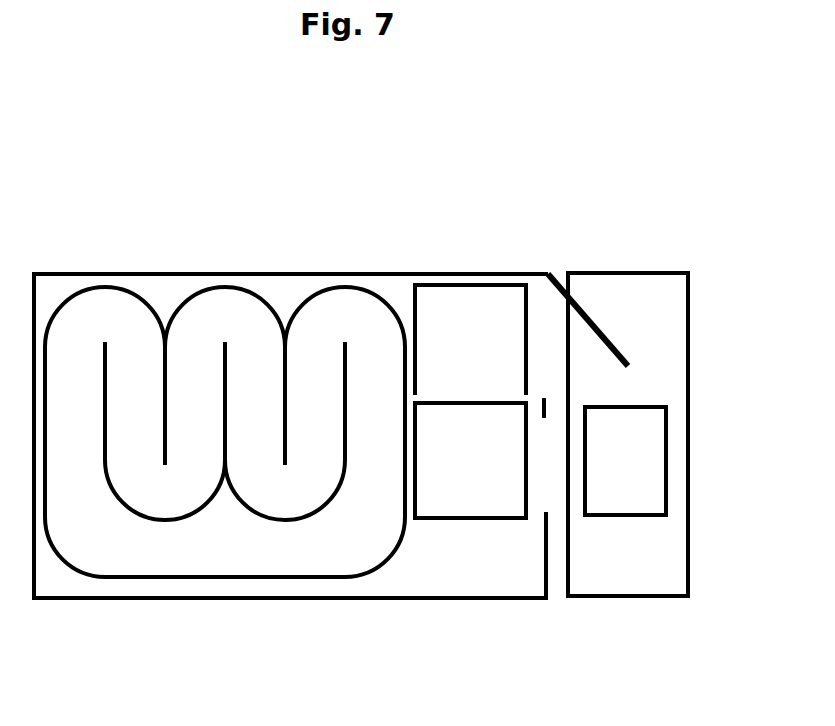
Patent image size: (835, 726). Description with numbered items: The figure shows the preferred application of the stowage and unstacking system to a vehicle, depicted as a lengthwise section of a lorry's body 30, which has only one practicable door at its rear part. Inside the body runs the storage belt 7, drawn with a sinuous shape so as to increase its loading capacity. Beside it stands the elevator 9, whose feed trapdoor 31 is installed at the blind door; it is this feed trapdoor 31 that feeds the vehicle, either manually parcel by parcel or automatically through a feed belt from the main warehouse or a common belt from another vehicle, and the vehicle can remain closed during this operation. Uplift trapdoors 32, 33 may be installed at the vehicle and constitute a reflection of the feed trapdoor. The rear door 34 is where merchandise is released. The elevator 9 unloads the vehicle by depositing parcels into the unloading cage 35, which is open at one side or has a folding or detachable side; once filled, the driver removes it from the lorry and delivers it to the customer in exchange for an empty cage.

The storage belt 7 is at (205, 543).
The elevator 9 is at (463, 462).
The lorry's body 30 is at (127, 600).
The feed trapdoor 31 is at (542, 477).
The uplift trapdoor 32 is at (625, 466).
The uplift trapdoor 33 is at (625, 570).
The rear door 34 is at (607, 340).
The unloading cage 35 is at (475, 345).